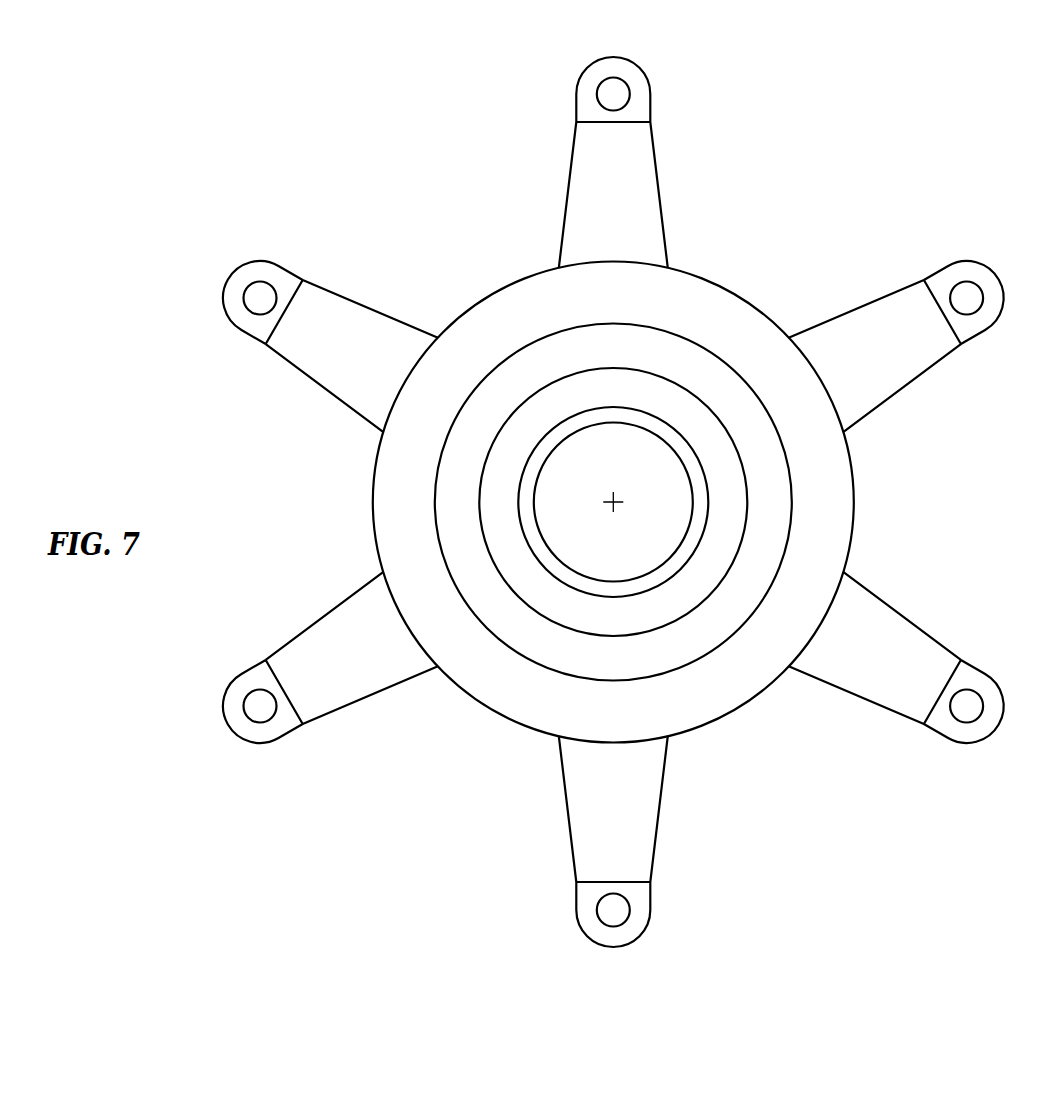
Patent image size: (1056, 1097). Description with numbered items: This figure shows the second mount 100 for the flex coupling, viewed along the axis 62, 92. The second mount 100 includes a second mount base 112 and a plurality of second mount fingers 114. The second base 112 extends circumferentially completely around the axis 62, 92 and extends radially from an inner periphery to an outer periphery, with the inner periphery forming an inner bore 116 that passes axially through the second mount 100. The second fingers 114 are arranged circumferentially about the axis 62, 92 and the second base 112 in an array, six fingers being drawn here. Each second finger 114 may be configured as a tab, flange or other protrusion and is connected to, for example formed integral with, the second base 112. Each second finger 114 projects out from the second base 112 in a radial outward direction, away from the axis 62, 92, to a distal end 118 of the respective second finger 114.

The second mount 100 is at (624, 502).
The second mount base 112 is at (868, 496).
The second mount finger 114 is at (548, 154).
The inner bore 116 is at (632, 480).
The distal end 118 is at (621, 61).
The axis 62 is at (611, 561).
The axis 92 is at (614, 503).